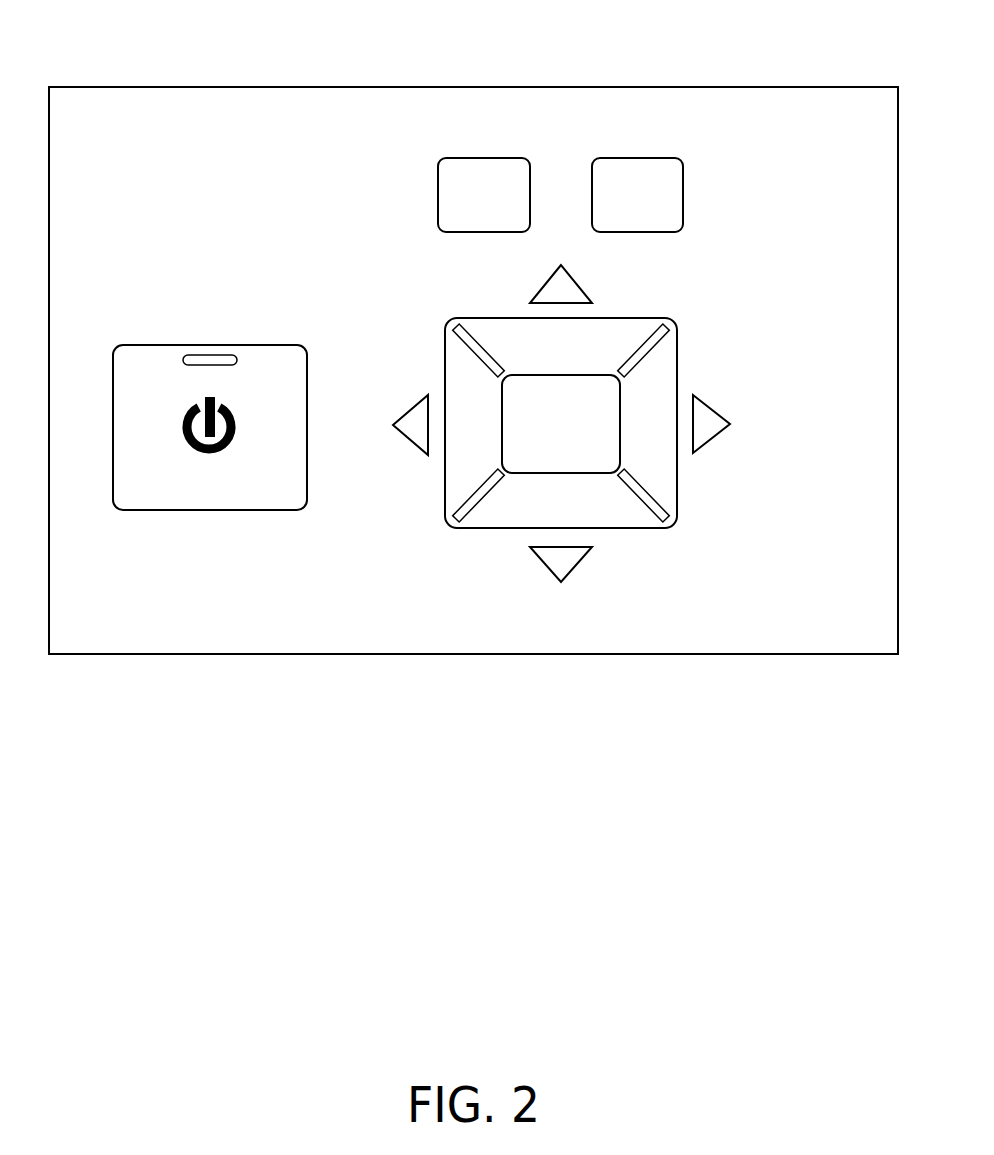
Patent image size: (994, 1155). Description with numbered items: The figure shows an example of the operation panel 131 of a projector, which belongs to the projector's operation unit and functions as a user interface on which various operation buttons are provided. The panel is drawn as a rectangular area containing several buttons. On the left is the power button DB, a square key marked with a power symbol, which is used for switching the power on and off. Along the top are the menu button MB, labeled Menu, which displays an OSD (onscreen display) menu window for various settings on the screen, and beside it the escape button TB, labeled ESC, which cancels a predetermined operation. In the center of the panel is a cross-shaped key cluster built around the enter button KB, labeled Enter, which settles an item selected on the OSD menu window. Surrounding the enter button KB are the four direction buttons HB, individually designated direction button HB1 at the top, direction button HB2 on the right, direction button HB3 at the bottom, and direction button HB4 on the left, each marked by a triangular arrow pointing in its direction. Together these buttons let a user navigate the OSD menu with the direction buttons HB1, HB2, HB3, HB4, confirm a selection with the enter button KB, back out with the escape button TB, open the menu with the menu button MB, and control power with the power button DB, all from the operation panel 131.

The operation panel 131 is at (398, 87).
The menu button MB is at (485, 157).
The escape button TB is at (637, 157).
The enter button KB is at (594, 501).
The direction button HB is at (594, 424).
The direction button HB1 is at (597, 342).
The direction button HB2 is at (637, 405).
The direction button HB3 is at (603, 502).
The direction button HB4 is at (473, 448).
The power button DB is at (208, 510).